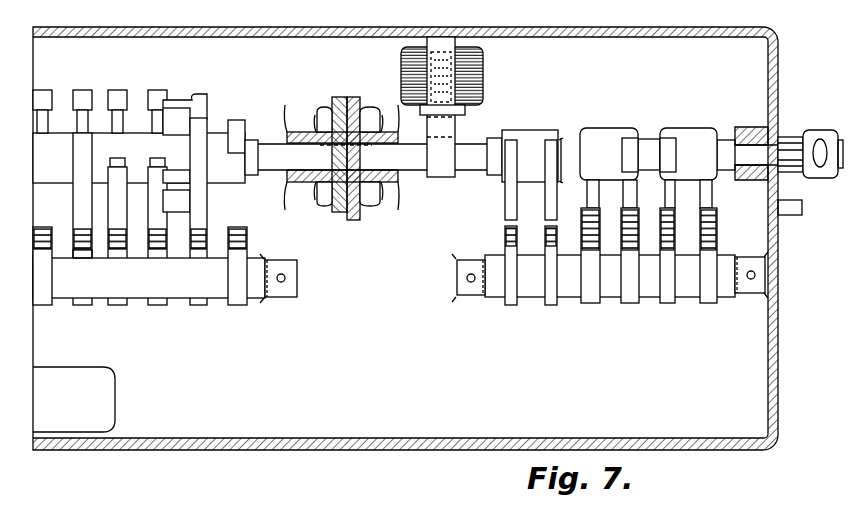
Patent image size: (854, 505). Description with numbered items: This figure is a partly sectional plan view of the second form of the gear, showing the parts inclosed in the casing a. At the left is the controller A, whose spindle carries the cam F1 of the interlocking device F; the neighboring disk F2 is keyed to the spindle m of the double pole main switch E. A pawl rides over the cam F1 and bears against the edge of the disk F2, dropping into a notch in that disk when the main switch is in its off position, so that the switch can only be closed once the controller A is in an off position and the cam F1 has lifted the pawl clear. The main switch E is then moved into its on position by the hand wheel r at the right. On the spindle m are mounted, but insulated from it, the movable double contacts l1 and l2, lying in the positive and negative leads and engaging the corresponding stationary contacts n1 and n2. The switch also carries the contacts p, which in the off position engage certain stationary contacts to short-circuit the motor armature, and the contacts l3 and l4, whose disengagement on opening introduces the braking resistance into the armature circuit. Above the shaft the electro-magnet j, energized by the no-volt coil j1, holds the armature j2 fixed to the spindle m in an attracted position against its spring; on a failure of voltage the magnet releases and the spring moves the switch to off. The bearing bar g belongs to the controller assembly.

The casing a is at (585, 33).
The controller A is at (231, 183).
The bearing bar g is at (135, 172).
The interlocking device F is at (339, 97).
The cam F1 is at (324, 113).
The disk F2 is at (372, 112).
The electro-magnet j is at (466, 112).
The no-volt coil j1 is at (484, 85).
The armature j2 is at (456, 130).
The main switch E is at (615, 187).
The spindle m is at (562, 170).
The contact l4 is at (518, 150).
The contact l3 is at (527, 232).
The contacts p is at (629, 147).
The double contacts l1 is at (624, 190).
The stationary contacts n1 is at (624, 236).
The double contacts l2 is at (703, 192).
The stationary contacts n2 is at (703, 242).
The hand wheel r is at (818, 150).